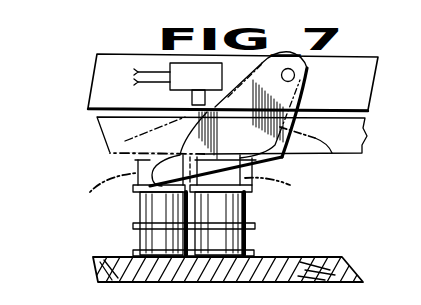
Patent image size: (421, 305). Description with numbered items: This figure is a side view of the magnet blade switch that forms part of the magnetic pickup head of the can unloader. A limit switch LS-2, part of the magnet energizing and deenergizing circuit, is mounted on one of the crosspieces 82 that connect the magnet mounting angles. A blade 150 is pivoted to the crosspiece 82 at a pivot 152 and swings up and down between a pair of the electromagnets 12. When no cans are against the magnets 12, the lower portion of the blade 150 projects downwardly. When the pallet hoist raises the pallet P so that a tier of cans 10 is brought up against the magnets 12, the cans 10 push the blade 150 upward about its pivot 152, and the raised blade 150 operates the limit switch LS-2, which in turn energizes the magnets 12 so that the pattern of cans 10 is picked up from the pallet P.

The limit switch LS-2 is at (187, 72).
The crosspiece 82 is at (97, 77).
The electromagnet 12 is at (108, 146).
The pivot 152 is at (295, 75).
The blade 150 is at (282, 157).
The cans 10 is at (137, 210).
The pallet P is at (313, 260).